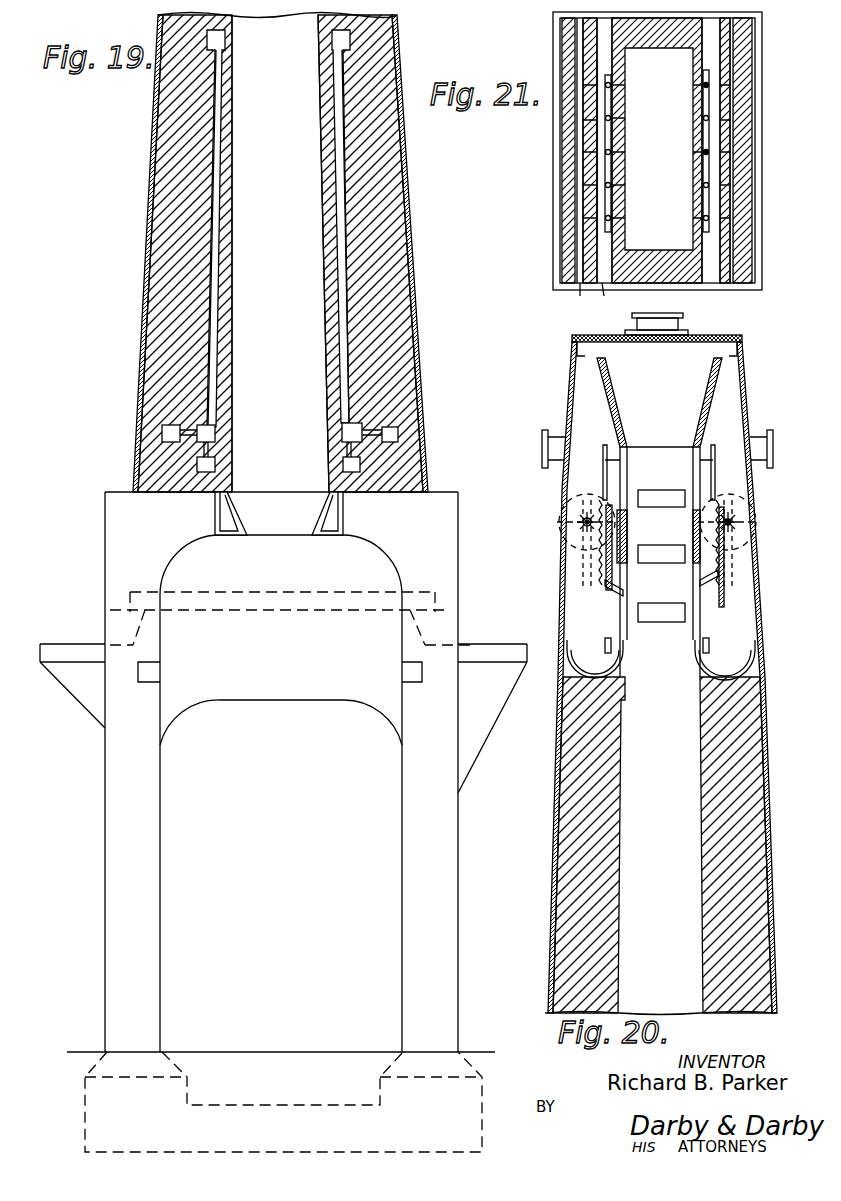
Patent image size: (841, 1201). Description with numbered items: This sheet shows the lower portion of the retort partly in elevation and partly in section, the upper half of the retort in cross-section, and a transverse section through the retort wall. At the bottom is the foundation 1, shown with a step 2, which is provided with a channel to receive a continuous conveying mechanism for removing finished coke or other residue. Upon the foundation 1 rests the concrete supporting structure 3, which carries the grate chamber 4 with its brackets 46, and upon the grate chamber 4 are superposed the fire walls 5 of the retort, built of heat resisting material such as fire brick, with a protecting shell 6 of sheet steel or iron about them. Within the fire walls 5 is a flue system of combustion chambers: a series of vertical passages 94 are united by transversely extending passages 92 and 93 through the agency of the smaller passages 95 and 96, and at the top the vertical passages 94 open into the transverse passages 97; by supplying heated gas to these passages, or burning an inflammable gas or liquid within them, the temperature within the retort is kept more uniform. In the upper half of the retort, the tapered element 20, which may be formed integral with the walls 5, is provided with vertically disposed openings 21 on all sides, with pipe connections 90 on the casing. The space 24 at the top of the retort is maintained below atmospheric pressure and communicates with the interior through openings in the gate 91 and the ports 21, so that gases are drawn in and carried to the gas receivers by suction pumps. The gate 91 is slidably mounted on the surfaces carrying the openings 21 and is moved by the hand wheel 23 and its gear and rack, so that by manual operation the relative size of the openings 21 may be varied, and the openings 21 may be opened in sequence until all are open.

In FIG. 19, the foundation 1 is at (85, 1105).
In FIG. 19, the footing step 2 is at (282, 1078).
In FIG. 19, the concrete supporting structure 3 is at (106, 858).
In FIG. 19, the grate chamber 4 is at (118, 544).
In FIG. 19, the fire walls 5 is at (163, 283).
In FIG. 21, the fire walls 5 is at (568, 147).
In FIG. 20, the fire walls 5 is at (578, 800).
In FIG. 19, the outer shell 6 is at (141, 333).
In FIG. 21, the outer shell 6 is at (552, 198).
In FIG. 20, the outer shell 6 is at (558, 621).
In FIG. 20, the tapered element 20 is at (619, 408).
In FIG. 19, the openings 21 is at (112, 367).
In FIG. 20, the openings 21 is at (648, 515).
In FIG. 20, the hand wheels 23 is at (560, 526).
In FIG. 20, the space 24 is at (661, 659).
In FIG. 19, the bracket 46 is at (330, 518).
In FIG. 20, the pipe connection 90 is at (547, 463).
In FIG. 20, the gate 91 is at (622, 618).
In FIG. 19, the transversely extending passage 92 is at (402, 437).
In FIG. 21, the transversely extending passage 92 is at (566, 302).
In FIG. 19, the transversely extending passage 93 is at (347, 467).
In FIG. 21, the transversely extending passage 93 is at (610, 302).
In FIG. 19, the vertical passages 94 is at (345, 331).
In FIG. 21, the vertical passages 94 is at (612, 228).
In FIG. 19, the smaller passage 95 is at (376, 426).
In FIG. 21, the smaller passage 95 is at (600, 135).
In FIG. 19, the smaller passage 96 is at (352, 448).
In FIG. 21, the smaller passage 96 is at (612, 87).
In FIG. 19, the transverse passages 97 is at (340, 42).